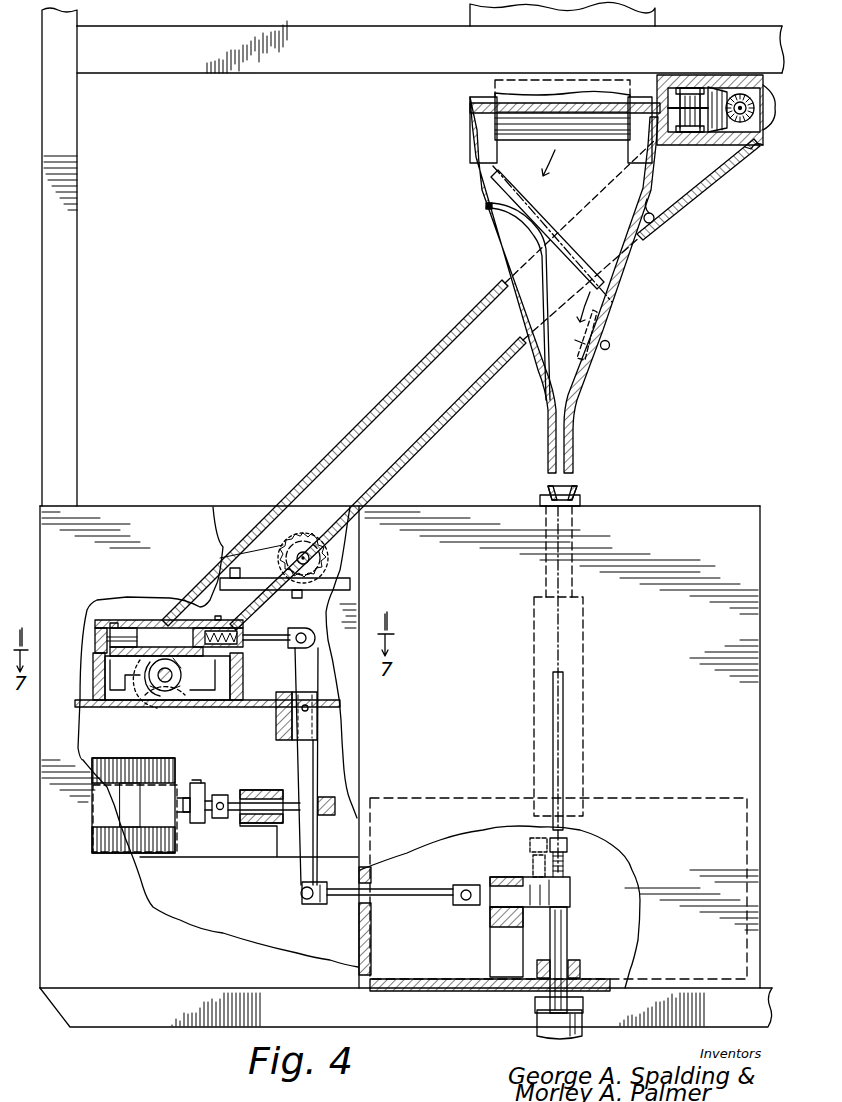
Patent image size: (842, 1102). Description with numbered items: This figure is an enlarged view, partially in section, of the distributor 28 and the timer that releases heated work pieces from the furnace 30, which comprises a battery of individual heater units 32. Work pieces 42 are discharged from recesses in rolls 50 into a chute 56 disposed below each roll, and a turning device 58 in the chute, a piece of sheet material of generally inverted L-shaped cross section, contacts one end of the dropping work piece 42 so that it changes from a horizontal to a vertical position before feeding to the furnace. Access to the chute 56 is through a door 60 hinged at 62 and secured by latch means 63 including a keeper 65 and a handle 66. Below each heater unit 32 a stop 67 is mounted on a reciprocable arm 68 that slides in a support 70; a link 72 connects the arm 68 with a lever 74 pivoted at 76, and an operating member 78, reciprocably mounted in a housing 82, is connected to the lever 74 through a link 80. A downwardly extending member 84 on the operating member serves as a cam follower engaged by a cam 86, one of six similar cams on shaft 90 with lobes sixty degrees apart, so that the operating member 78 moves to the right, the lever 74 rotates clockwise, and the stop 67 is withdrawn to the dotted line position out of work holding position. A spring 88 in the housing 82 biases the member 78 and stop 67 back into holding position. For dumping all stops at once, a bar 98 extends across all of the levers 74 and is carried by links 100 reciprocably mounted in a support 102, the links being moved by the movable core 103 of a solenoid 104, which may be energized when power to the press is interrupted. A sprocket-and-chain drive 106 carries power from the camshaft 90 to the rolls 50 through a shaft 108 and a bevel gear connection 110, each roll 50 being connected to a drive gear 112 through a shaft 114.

The distributor 28 is at (502, 248).
The furnace 30 is at (683, 519).
The heater unit 32 is at (580, 492).
The work piece 42 is at (516, 183).
The roll 50 is at (575, 120).
The chute 56 is at (490, 189).
The turning device 58 is at (493, 223).
The door 60 is at (608, 290).
The hinge 62 is at (656, 212).
The latch means 63 is at (597, 330).
The keeper 65 is at (580, 345).
The handle 66 is at (610, 345).
The stop 67 is at (530, 843).
The reciprocable arm 68 is at (490, 892).
The support 70 is at (512, 952).
The link 72 is at (390, 894).
The lever 74 is at (300, 877).
The pivot 76 is at (276, 718).
The operating member 78 is at (123, 630).
The link 80 is at (274, 636).
The housing 82 is at (146, 620).
The cam follower member 84 is at (182, 664).
The cam 86 is at (152, 660).
The spring 88 is at (236, 630).
The shaft 90 is at (160, 688).
The bar 98 is at (327, 796).
The link 100 is at (222, 796).
The support 102 is at (262, 792).
The movable core 103 is at (177, 806).
The solenoid 104 is at (128, 853).
The sprocket-and-chain drive 106 is at (372, 418).
The shaft 108 is at (742, 115).
The bevel gear connection 110 is at (722, 92).
The drive gear 112 is at (690, 90).
The shaft 114 is at (624, 108).